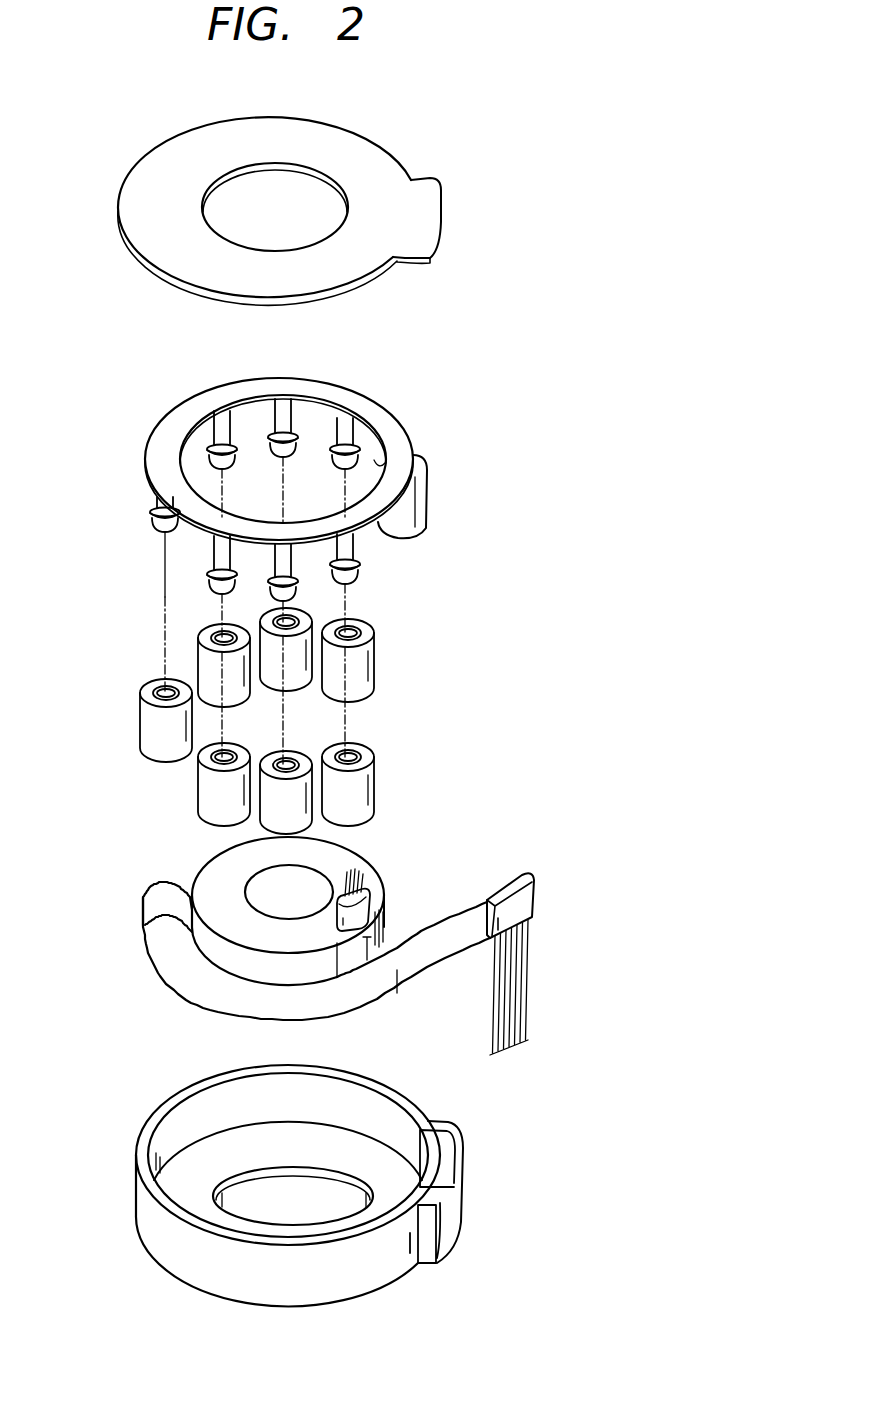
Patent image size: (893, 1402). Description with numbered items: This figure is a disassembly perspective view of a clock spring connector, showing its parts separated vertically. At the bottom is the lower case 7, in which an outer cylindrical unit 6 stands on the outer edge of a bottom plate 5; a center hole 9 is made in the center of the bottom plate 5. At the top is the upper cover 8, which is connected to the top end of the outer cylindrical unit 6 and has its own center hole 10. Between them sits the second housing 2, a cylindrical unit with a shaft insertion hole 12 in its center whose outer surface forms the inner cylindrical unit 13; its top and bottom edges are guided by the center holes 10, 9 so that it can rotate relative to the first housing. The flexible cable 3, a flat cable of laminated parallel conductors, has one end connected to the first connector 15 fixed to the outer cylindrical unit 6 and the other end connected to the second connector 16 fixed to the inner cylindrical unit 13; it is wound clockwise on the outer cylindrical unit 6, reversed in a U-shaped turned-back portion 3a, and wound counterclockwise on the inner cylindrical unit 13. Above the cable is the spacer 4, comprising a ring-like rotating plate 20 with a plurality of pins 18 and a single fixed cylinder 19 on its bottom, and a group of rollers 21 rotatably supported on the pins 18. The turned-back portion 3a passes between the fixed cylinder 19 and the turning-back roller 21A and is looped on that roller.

The second housing 2 is at (376, 858).
The flexible cable 3 is at (160, 960).
The turned-back portion 3a is at (143, 897).
The spacer 4 is at (395, 413).
The bottom plate 5 is at (185, 1183).
The outer cylindrical unit 6 is at (155, 1225).
The lower case 7 is at (168, 1110).
The upper cover 8 is at (387, 173).
The center hole 9 is at (338, 1205).
The center hole 10 is at (223, 200).
The shaft insertion hole 12 is at (255, 882).
The inner cylindrical unit 13 is at (372, 935).
The first connector 15 is at (513, 880).
The second connector 16 is at (368, 905).
The pins 18 is at (357, 557).
The fixed cylinder 19 is at (428, 497).
The rotating plate 20 is at (402, 441).
The rollers 21 is at (142, 712).
The turning-back roller 21A is at (376, 668).